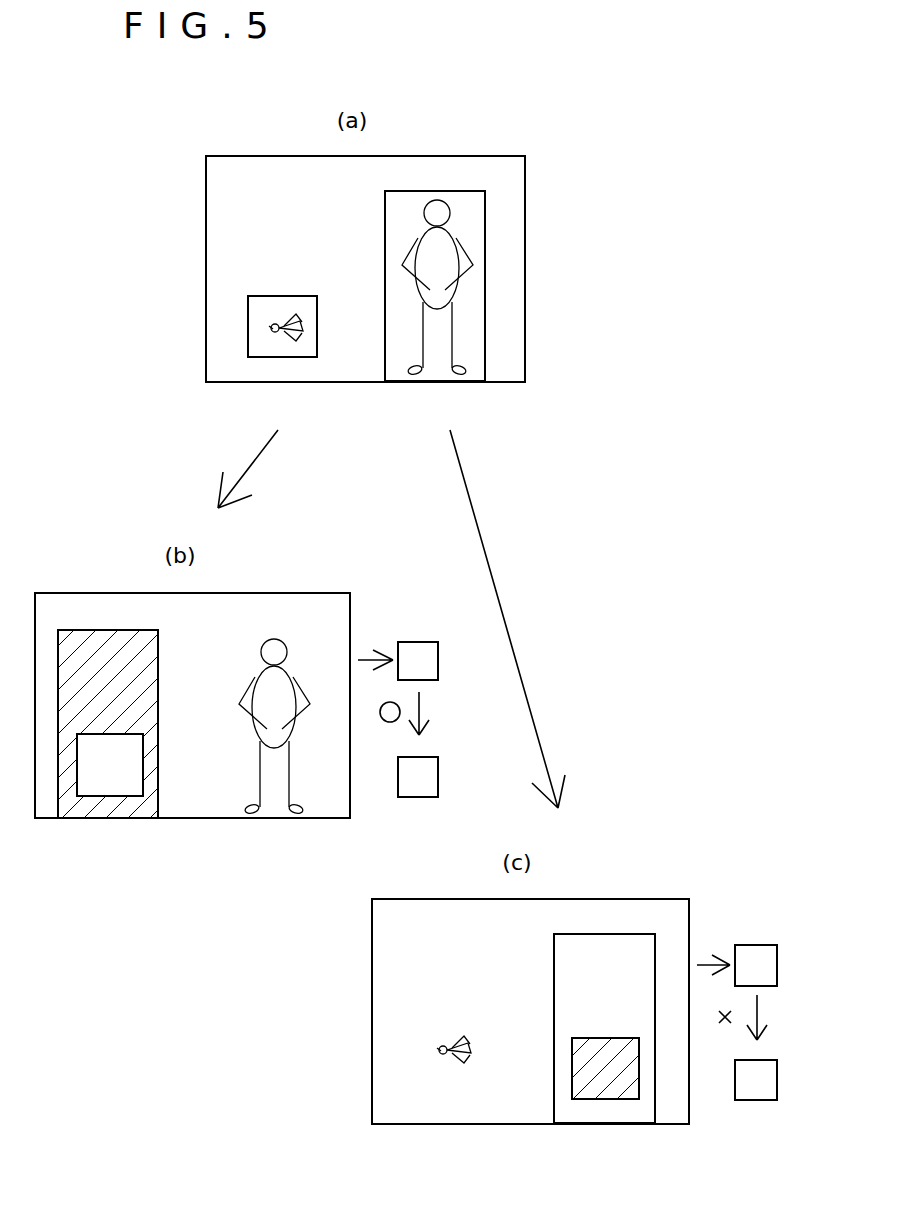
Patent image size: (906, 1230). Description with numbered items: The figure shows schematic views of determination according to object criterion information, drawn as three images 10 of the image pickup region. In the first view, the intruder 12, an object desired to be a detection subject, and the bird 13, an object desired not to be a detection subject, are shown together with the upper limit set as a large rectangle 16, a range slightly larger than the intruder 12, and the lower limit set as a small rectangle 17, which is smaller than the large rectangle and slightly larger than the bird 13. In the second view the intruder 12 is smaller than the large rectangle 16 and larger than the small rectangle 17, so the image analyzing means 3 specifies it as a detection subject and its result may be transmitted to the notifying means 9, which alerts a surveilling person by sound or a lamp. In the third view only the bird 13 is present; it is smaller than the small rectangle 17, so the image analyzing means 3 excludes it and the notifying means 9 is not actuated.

The display screen / captured image 10 is at (460, 156).
The large rectangle 16 is at (385, 220).
The small rectangle 17 is at (283, 296).
The intruder 12 is at (458, 244).
The bird 13 is at (300, 324).
The image analyzing means 3 is at (425, 642).
The notifying means 9 is at (432, 757).